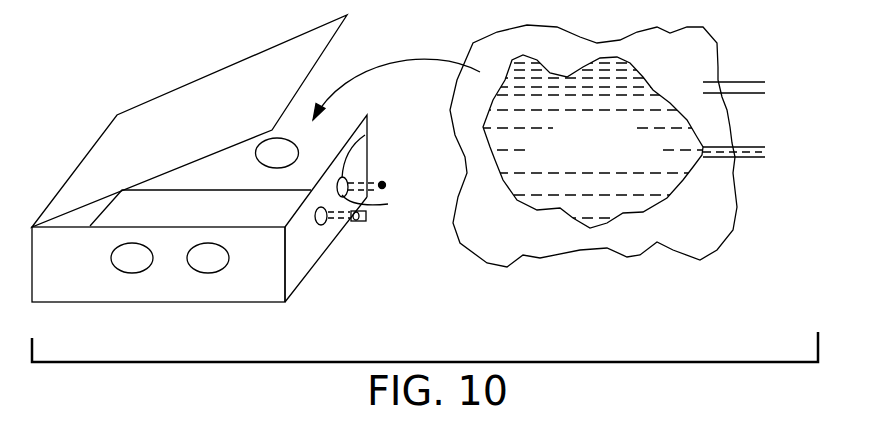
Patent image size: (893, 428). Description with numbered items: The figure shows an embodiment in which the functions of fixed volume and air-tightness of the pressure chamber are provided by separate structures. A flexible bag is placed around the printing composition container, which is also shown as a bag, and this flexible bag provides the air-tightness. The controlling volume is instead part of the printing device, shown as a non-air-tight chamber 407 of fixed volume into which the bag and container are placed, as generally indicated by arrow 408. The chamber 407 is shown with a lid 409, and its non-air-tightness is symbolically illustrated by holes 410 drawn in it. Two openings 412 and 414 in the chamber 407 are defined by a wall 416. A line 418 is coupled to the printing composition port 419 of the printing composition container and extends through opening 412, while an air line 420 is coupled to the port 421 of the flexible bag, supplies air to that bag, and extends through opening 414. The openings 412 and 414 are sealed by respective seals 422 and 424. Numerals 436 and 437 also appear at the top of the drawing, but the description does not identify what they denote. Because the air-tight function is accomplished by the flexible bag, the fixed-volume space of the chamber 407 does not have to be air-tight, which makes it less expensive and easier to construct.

The non-air-tight chamber 407 is at (265, 280).
The arrow 408 is at (413, 57).
The lid 409 is at (193, 115).
The holes 410 is at (282, 153).
The opening 412 is at (322, 222).
The opening 414 is at (365, 135).
The wall 416 is at (298, 270).
The line 418 is at (367, 220).
The printing composition port 419 is at (705, 155).
The air line 420 is at (383, 181).
The port 421 is at (718, 80).
The seal 422 is at (317, 217).
The seal 424 is at (382, 206).
The first level sensor 436 is at (565, 97).
The second level sensor 437 is at (638, 50).